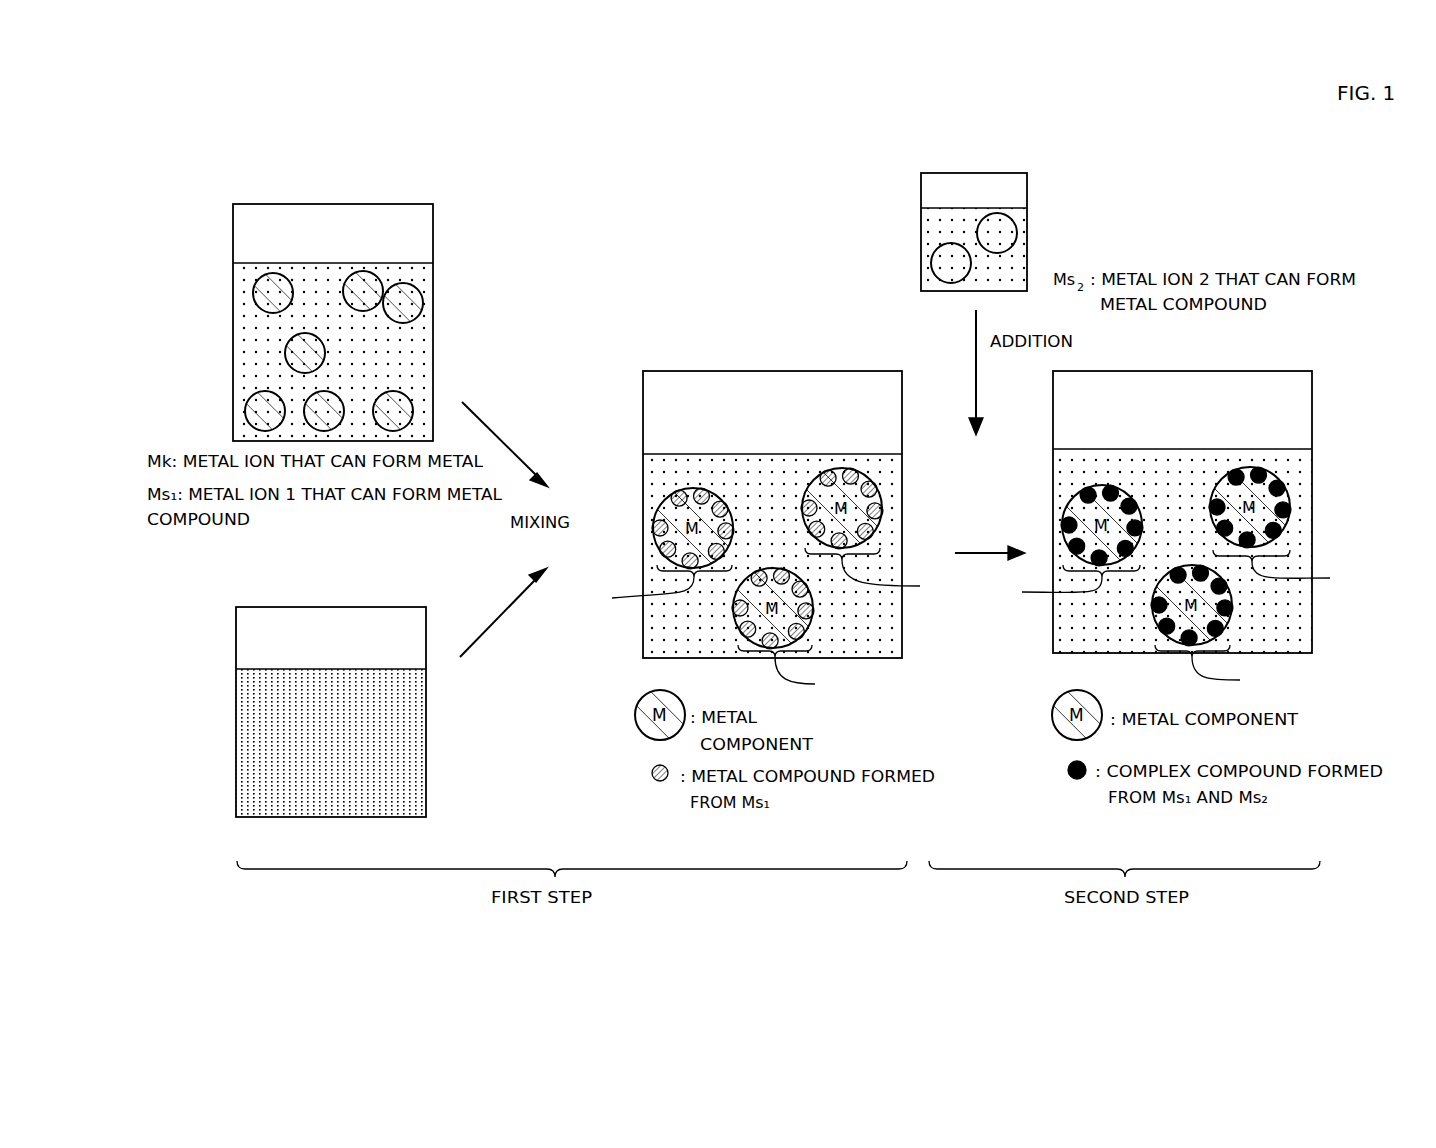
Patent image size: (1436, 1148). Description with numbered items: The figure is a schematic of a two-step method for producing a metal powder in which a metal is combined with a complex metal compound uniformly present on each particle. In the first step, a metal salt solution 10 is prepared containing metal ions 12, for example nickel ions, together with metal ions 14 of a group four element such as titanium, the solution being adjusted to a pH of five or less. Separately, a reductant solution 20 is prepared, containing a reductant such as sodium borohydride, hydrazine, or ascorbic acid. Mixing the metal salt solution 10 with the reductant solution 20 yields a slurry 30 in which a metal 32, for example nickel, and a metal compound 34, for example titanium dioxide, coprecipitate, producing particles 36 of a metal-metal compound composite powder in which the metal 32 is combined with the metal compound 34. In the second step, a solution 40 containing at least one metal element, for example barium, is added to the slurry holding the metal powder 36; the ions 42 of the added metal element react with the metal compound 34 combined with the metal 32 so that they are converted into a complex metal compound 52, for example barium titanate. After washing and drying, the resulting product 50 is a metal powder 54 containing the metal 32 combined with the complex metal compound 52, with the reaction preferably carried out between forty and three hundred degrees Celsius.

The metal salt solution 10 is at (233, 331).
The metal ion 12 is at (423, 302).
The metal ion of group 4 element 14 is at (374, 283).
The reductant solution 20 is at (236, 740).
The slurry prepared in first step 30 is at (643, 478).
The metal 32 is at (662, 532).
The metal compound 34 is at (660, 552).
The metal powder containing metal combined with metal compound 36 is at (764, 633).
The solution containing metal element 40 is at (921, 222).
The metal ion added in second step 42 is at (931, 265).
The solution after second step 50 is at (1312, 478).
The complex metal compound 52 is at (1286, 500).
The metal powder containing metal combined with complex metal compound 54 is at (1174, 623).